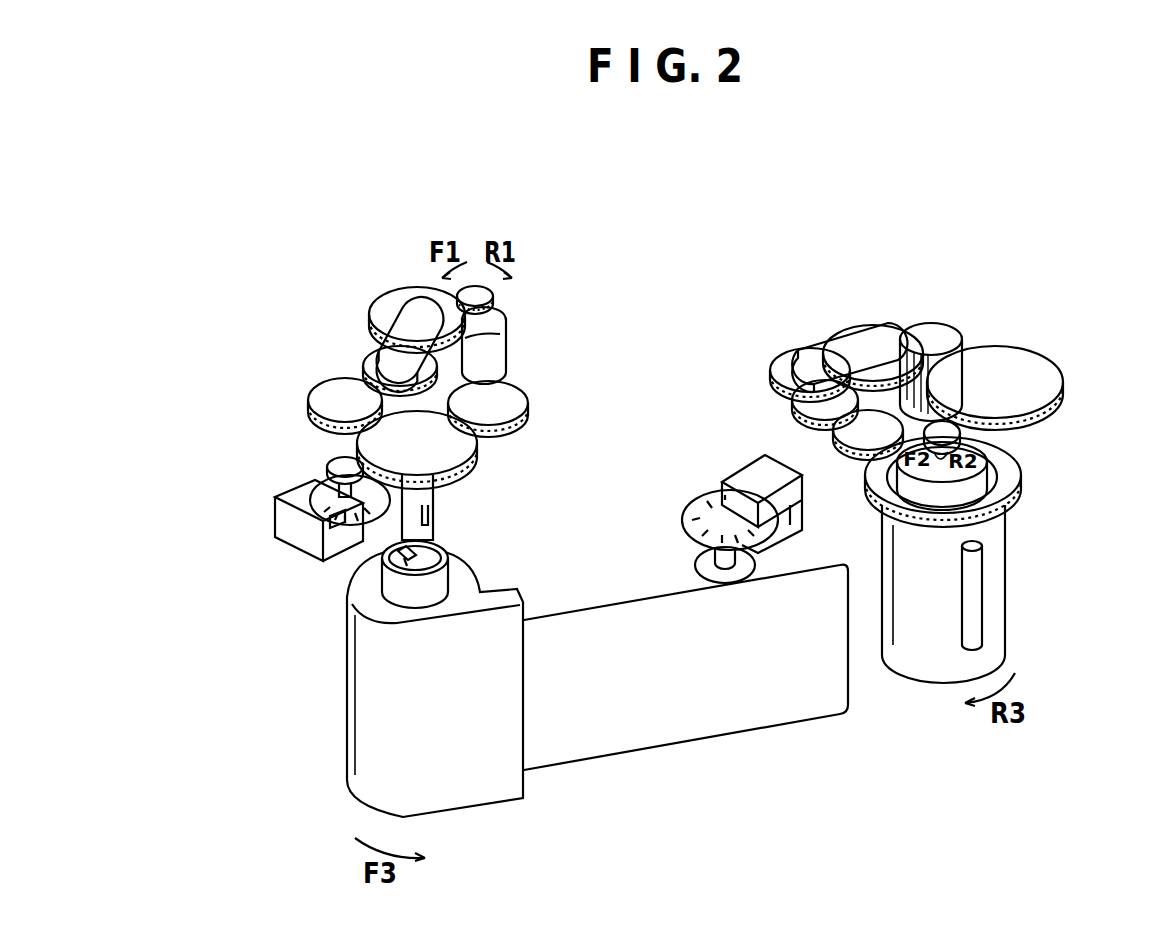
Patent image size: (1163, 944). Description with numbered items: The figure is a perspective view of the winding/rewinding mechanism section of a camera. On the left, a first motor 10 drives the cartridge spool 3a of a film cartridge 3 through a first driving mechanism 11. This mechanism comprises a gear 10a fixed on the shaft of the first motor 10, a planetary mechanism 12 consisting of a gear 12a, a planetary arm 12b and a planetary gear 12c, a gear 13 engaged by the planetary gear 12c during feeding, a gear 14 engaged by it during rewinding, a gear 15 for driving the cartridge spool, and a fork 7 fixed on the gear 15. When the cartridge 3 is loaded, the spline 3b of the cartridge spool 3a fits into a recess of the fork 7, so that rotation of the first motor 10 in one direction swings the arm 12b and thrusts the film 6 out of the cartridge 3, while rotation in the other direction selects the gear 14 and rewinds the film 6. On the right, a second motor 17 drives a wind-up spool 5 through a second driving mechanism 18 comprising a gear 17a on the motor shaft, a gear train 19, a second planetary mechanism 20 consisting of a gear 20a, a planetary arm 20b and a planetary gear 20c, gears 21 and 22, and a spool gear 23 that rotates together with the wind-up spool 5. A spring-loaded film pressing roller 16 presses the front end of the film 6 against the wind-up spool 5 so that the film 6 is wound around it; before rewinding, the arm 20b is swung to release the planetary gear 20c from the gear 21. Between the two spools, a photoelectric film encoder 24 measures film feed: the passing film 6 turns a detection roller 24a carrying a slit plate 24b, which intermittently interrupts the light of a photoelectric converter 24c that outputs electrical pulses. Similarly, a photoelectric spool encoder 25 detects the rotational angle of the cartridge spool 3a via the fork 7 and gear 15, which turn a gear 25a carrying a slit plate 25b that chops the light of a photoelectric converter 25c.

The film cartridge 3 is at (355, 722).
The cartridge spool 3a is at (383, 587).
The spline 3b is at (448, 552).
The wind-up spool 5 is at (922, 667).
The film 6 is at (654, 745).
The fork 7 is at (437, 503).
The first motor 10 is at (507, 347).
The gear 10a is at (497, 287).
The first driving mechanism 11 is at (210, 151).
The planetary mechanism 12 is at (437, 197).
The gear 12a is at (413, 293).
The planetary arm 12b is at (400, 330).
The planetary gear 12c is at (365, 362).
The gear 13 is at (313, 392).
The gear 14 is at (527, 398).
The gear 15 is at (480, 467).
The film pressing roller 16 is at (977, 628).
The second motor 17 is at (997, 503).
The gear 17a is at (950, 424).
The second driving mechanism 18 is at (1162, 290).
The gear train 19 is at (943, 312).
The second planetary mechanism 20 is at (1005, 260).
The gear 20a is at (903, 325).
The planetary arm 20b is at (857, 347).
The planetary gear 20c is at (785, 357).
The gear 21 is at (792, 402).
The gear 22 is at (835, 447).
The spool gear 23 is at (878, 500).
The photoelectric film encoder 24 is at (603, 472).
The detection roller 24a is at (695, 568).
The slit plate 24b is at (700, 508).
The photoelectric converter 24c is at (722, 478).
The photoelectric spool encoder 25 is at (190, 405).
The gear 25a is at (323, 463).
The slit plate 25b is at (345, 525).
The photoelectric converter 25c is at (277, 508).